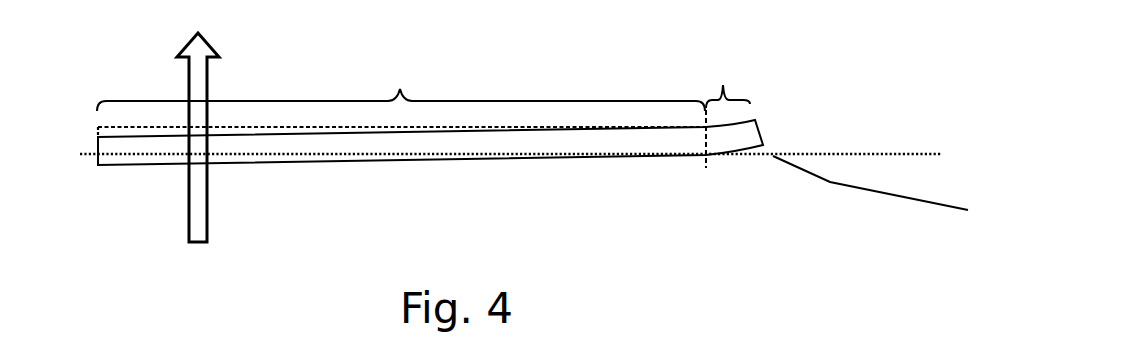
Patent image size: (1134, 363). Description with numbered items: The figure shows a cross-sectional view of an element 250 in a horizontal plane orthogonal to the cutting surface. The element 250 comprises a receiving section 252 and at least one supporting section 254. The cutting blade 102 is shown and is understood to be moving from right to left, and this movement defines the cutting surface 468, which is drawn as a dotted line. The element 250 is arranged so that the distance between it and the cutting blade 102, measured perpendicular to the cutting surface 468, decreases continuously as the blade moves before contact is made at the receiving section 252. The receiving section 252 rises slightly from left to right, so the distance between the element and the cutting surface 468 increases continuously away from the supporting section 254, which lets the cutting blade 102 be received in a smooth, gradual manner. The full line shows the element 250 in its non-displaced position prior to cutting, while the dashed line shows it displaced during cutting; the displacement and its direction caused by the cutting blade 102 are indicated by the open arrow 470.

The cutting blade 102 is at (900, 180).
The element 250 is at (572, 143).
The receiving section 252 is at (719, 102).
The supporting section 254 is at (401, 77).
The cutting surface 468 is at (85, 156).
The open arrow 470 is at (193, 208).